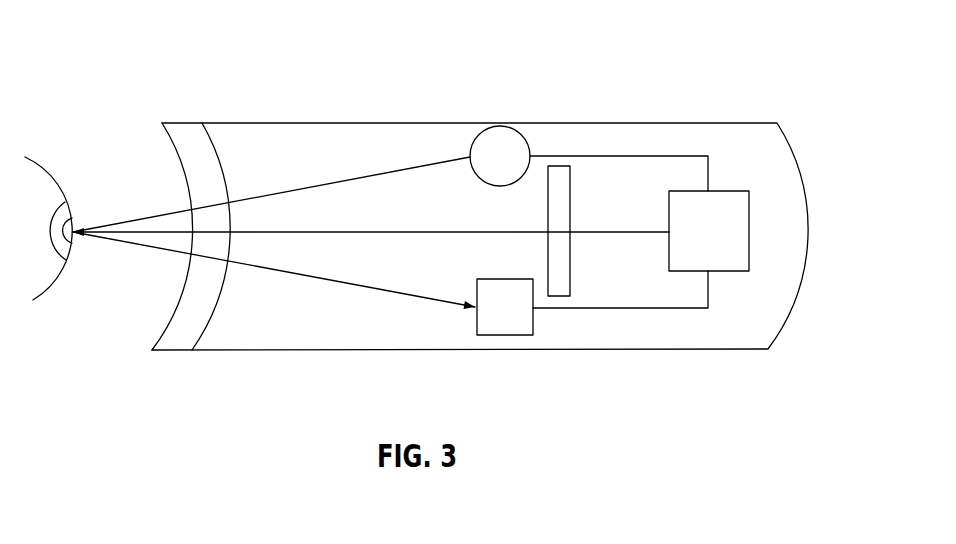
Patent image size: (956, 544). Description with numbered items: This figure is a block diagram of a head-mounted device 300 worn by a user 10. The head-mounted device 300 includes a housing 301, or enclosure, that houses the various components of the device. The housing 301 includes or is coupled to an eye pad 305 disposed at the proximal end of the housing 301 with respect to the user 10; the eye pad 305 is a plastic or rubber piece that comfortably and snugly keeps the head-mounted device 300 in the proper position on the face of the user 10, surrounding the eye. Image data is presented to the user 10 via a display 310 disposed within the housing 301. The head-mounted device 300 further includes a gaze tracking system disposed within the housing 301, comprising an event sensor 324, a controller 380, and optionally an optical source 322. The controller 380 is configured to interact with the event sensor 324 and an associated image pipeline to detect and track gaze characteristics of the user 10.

The user 10 is at (42, 122).
The head-mounted device 300 is at (348, 42).
The housing 301 is at (605, 350).
The eye pad 305 is at (182, 123).
The display 310 is at (558, 166).
The optical source 322 is at (500, 127).
The event sensor 324 is at (503, 337).
The controller 380 is at (749, 230).